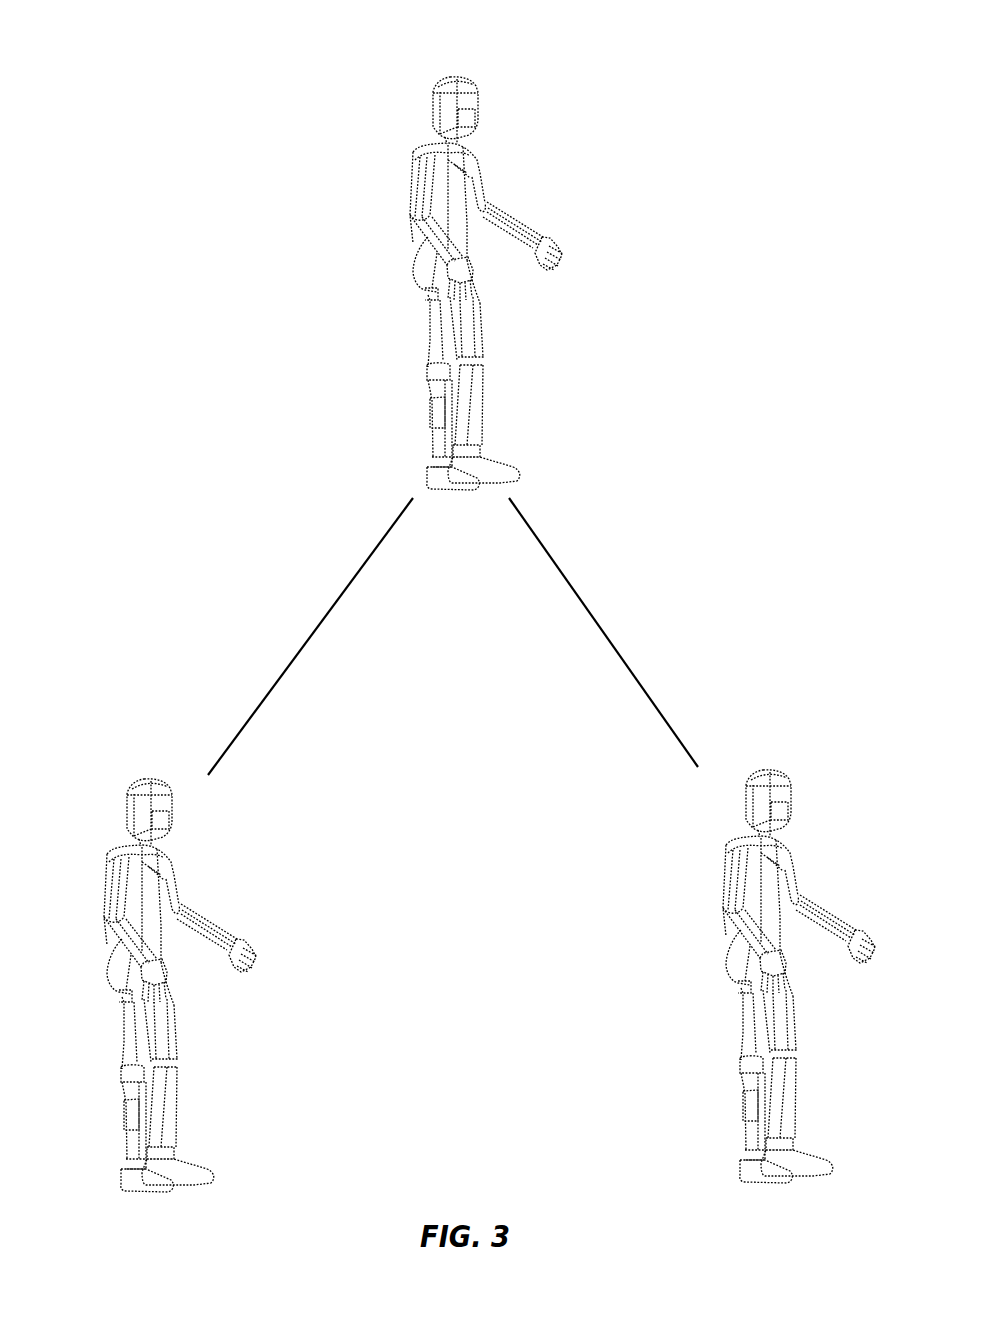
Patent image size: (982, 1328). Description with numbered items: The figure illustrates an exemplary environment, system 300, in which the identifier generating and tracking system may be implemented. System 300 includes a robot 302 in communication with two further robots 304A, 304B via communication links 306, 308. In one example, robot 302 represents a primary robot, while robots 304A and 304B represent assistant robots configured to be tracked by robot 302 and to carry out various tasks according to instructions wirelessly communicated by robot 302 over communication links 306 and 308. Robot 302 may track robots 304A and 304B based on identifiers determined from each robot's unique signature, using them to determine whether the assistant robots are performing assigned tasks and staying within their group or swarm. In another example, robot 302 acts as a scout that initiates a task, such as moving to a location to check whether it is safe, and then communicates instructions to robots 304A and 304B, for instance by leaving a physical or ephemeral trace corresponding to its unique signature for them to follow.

The system 300 is at (113, 79).
The robot 302 is at (346, 98).
The robot 304A is at (108, 757).
The robot 304B is at (811, 757).
The communication link 306 is at (328, 608).
The communication link 308 is at (592, 611).